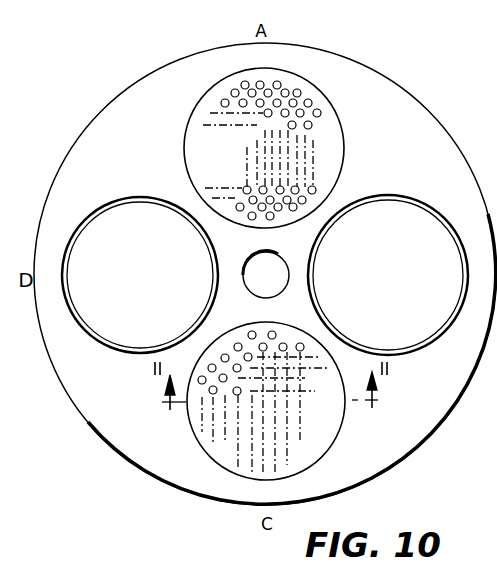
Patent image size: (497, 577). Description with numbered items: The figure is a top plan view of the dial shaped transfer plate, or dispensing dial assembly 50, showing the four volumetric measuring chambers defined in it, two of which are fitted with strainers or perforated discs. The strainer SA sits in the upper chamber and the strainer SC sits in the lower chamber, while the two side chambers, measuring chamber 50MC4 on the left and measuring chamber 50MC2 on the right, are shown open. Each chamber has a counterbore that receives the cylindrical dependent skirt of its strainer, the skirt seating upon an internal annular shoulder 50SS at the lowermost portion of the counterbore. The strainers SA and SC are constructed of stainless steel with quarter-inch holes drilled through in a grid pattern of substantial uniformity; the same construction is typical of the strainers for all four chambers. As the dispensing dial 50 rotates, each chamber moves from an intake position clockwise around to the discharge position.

The dispensing dial assembly 50 is at (447, 130).
The internal annular shoulder 50SS is at (135, 354).
The measuring chamber 50MC4 is at (190, 287).
The measuring chamber 50MC2 is at (434, 287).
The strainer SA is at (309, 105).
The strainer SC is at (317, 448).